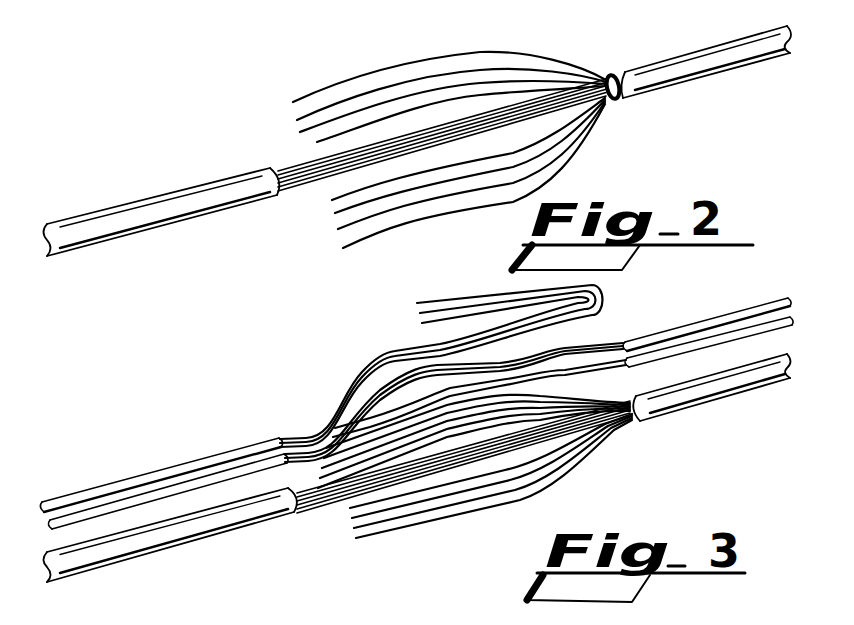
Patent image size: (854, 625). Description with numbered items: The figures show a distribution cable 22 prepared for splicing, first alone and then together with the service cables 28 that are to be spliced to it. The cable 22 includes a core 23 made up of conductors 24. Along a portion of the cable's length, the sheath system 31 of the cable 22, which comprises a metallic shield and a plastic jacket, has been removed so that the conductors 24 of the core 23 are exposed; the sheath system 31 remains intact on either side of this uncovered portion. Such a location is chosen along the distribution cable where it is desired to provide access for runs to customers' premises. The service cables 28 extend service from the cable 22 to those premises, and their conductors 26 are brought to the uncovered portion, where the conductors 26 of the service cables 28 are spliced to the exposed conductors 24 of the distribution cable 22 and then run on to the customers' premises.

In FIG. 2, the distribution cable 22 is at (113, 217).
In FIG. 3, the distribution cable 22 is at (147, 540).
In FIG. 2, the core 23 is at (302, 187).
In FIG. 2, the conductors 24 is at (373, 220).
In FIG. 3, the conductors 24 is at (455, 518).
In FIG. 3, the conductors 26 is at (433, 300).
In FIG. 3, the service cables 28 is at (140, 498).
In FIG. 2, the sheath system 31 is at (612, 76).